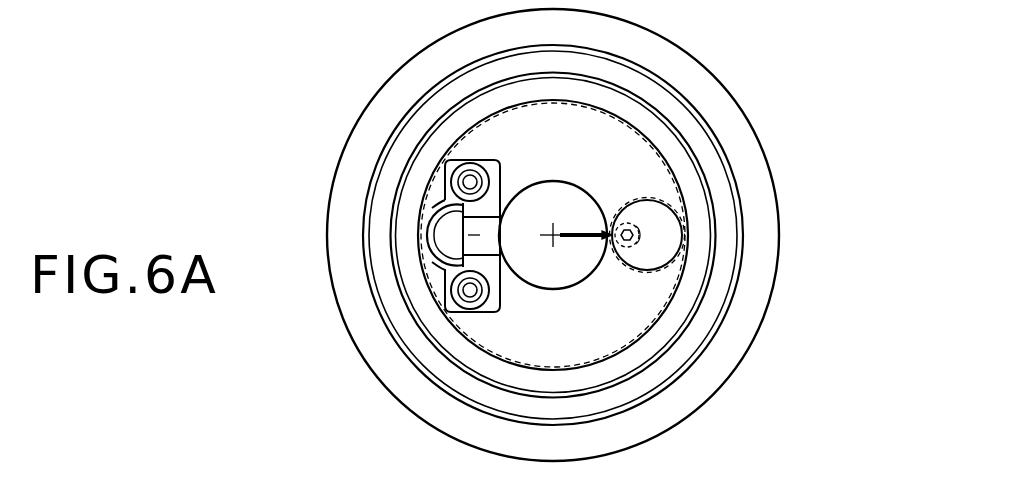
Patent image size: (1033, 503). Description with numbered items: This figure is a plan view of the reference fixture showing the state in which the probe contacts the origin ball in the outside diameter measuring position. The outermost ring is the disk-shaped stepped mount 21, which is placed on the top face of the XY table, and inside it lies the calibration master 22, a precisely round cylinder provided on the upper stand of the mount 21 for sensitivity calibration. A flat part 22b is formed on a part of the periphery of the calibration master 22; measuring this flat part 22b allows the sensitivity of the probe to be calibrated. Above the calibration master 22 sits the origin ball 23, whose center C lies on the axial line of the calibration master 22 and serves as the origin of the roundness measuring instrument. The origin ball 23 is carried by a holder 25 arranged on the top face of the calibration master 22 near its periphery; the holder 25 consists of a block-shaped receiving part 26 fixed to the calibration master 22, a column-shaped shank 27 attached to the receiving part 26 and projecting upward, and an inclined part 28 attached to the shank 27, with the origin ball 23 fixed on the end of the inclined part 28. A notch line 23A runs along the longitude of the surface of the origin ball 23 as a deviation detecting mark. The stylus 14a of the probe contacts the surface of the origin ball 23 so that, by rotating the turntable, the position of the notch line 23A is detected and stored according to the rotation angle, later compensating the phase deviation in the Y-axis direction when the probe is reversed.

The mount 21 is at (725, 108).
The calibration master 22 is at (632, 150).
The flat part 22b is at (687, 232).
The stylus 14a is at (593, 228).
The origin ball 23 is at (578, 275).
The notch line 23A is at (567, 242).
The center C is at (551, 224).
The holder 25 is at (477, 315).
The receiving part 26 is at (440, 168).
The shank 27 is at (427, 235).
The inclined part 28 is at (478, 247).